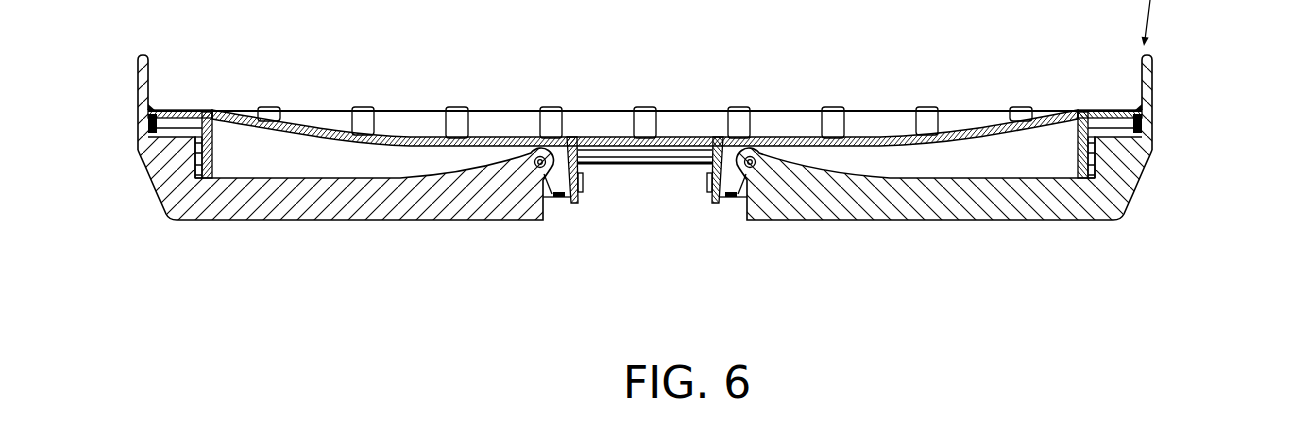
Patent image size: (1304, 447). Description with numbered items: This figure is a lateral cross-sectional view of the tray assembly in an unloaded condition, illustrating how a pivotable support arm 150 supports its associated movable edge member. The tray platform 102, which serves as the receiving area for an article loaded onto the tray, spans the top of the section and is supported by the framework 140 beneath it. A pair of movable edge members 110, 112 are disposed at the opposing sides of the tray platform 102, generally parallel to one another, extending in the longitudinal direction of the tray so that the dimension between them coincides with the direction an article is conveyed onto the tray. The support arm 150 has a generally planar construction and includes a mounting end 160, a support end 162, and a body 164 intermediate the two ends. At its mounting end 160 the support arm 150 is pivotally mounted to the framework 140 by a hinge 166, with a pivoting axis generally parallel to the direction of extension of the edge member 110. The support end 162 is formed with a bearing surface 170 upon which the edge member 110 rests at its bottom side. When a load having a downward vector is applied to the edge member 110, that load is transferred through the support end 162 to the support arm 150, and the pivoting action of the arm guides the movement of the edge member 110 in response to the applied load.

The tray platform 102 is at (402, 107).
The movable edge member 110 is at (1157, 74).
The movable edge member 112 is at (134, 92).
The framework 140 is at (307, 118).
The support arm 150 is at (355, 230).
The mounting end 160 is at (738, 202).
The support end 162 is at (1158, 162).
The body 164 is at (973, 208).
The hinge 166 is at (756, 166).
The bearing surface 170 is at (1112, 130).